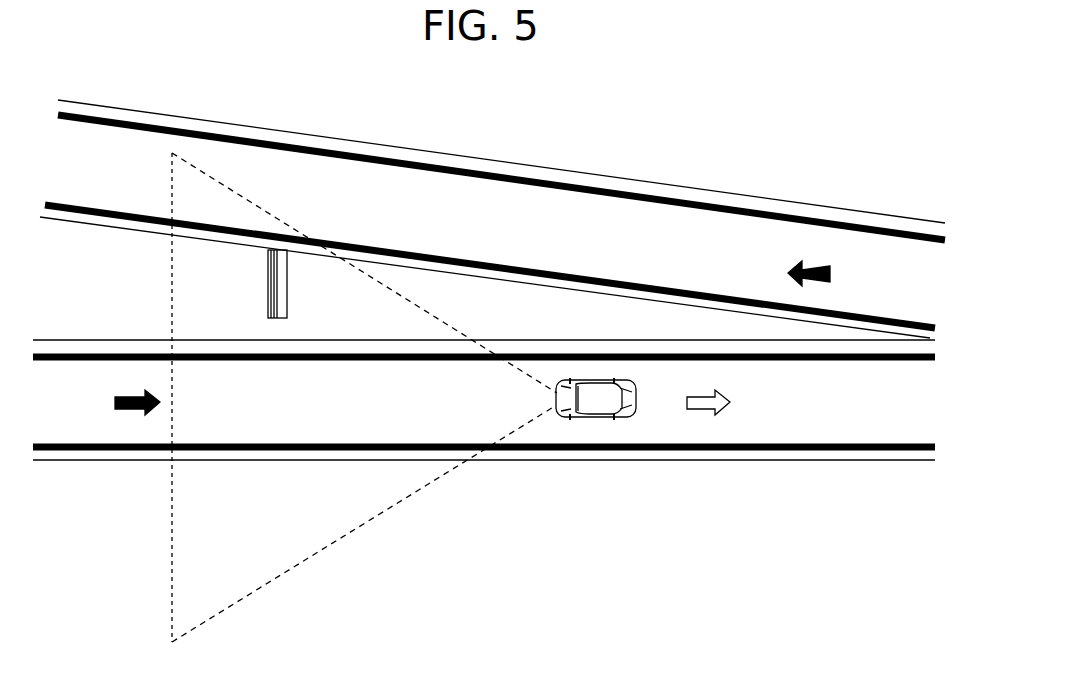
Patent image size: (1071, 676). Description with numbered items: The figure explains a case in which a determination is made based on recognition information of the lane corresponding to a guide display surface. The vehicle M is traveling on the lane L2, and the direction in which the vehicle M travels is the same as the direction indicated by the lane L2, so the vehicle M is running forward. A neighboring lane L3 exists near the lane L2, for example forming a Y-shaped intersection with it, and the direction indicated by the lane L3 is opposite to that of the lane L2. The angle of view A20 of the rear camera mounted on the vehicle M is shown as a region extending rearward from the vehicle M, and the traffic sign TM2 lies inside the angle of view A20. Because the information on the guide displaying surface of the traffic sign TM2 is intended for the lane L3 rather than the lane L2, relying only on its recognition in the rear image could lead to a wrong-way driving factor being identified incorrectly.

The traffic sign TM2 is at (290, 250).
The lane L3 is at (702, 236).
The lane L2 is at (68, 371).
The vehicle M is at (592, 386).
The angle of view A20 is at (422, 489).